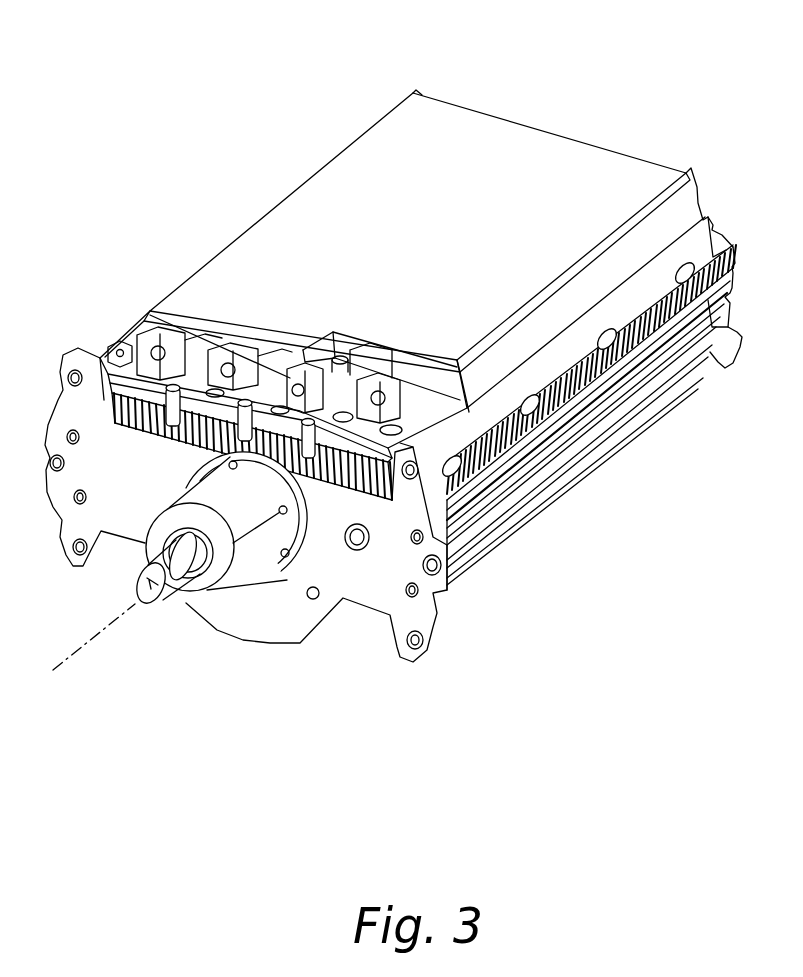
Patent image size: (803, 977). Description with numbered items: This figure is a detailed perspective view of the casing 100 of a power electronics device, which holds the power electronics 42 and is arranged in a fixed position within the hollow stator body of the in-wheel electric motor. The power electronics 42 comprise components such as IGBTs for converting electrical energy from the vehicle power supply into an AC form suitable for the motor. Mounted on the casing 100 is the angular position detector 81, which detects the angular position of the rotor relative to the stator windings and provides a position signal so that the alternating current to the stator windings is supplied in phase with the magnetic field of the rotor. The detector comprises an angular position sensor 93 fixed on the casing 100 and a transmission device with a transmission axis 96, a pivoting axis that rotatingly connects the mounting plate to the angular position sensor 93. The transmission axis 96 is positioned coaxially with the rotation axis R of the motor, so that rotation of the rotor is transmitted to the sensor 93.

The casing 100 is at (421, 307).
The power electronics 42 is at (522, 176).
The angular position detector 81 is at (212, 637).
The angular position sensor 93 is at (258, 547).
The transmission axis 96 is at (140, 572).
The rotation axis R is at (117, 617).